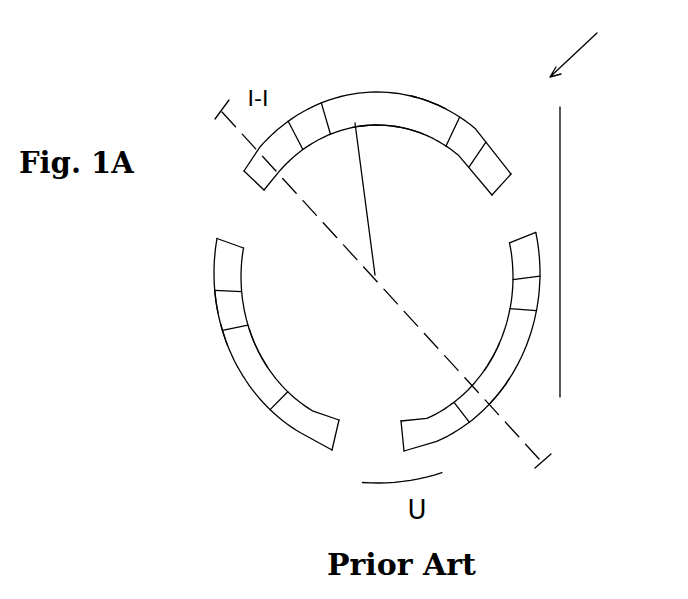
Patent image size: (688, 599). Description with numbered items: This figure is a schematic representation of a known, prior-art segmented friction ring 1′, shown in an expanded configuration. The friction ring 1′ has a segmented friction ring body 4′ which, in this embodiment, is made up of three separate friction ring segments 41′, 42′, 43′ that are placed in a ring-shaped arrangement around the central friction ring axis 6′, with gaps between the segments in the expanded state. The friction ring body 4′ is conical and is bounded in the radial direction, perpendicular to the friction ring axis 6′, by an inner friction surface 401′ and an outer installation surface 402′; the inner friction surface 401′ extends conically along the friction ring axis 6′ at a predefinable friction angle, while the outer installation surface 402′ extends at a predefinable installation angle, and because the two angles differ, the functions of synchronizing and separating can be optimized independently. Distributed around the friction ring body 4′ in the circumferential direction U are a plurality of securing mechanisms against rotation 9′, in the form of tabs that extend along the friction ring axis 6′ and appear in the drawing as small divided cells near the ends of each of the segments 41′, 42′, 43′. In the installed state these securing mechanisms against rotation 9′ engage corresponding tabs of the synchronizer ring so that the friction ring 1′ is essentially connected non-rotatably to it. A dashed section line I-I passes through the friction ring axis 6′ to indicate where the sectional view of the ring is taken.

The friction ring 1′ is at (584, 42).
The friction ring body 4′ is at (590, 252).
The friction ring axis 6′ is at (375, 275).
The securing mechanism against rotation 9′ is at (312, 122).
The friction ring segment 41′ is at (387, 118).
The friction ring segment 42′ is at (490, 357).
The friction ring segment 43′ is at (248, 355).
The inner friction surface 401′ is at (418, 134).
The outer installation surface 402′ is at (432, 103).